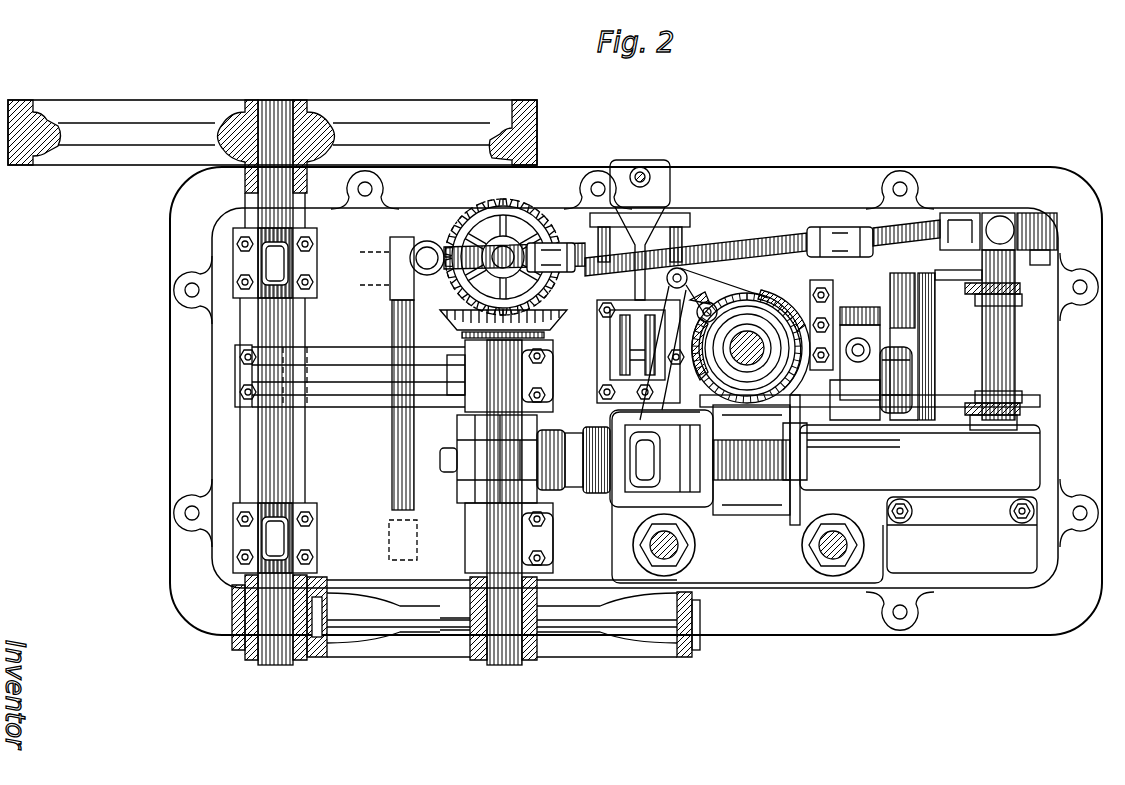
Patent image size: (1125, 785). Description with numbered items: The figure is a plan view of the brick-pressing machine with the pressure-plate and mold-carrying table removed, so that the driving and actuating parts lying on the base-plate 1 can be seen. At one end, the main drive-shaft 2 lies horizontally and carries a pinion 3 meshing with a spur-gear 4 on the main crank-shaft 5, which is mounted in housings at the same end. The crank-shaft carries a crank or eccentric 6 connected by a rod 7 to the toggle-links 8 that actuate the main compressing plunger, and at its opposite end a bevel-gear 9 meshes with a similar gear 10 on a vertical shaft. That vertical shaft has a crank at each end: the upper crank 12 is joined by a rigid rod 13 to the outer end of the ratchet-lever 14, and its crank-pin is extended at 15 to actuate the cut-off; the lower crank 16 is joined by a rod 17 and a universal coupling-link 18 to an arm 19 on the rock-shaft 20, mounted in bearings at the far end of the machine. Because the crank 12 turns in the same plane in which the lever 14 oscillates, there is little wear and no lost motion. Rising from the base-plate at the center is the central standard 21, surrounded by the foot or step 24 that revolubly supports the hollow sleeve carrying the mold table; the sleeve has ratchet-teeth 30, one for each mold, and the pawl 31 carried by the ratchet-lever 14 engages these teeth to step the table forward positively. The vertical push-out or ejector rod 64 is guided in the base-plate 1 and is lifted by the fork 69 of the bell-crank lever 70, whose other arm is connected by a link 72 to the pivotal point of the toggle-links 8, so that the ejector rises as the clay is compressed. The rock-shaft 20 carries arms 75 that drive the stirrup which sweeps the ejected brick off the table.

The base-plate 1 is at (188, 430).
The main drive-shaft 2 is at (278, 664).
The pinion 3 is at (299, 658).
The spur-gear 4 is at (400, 637).
The main crank-shaft 5 is at (505, 666).
The crank or eccentric 6 is at (488, 459).
The rod 7 is at (552, 480).
The toggle-links 8 is at (696, 480).
The bevel-gear 9 is at (613, 327).
The bevel-gear 10 is at (550, 297).
The crank 12 is at (448, 267).
The rod 13 is at (607, 268).
The ratchet-lever 14 is at (712, 330).
The extended crank-pin 15 is at (428, 248).
The crank 16 is at (540, 258).
The rod 17 is at (740, 250).
The universal coupling-link 18 is at (962, 222).
The arm 19 is at (1012, 217).
The rock-shaft 20 is at (998, 352).
The central standard 21 is at (750, 342).
The foot or step 24 is at (798, 300).
The ratchet-teeth 30 is at (795, 347).
The spring-pressed pawl 31 is at (713, 310).
The push-out or ejector rod 64 is at (858, 350).
The fork 69 is at (885, 323).
The bell-crank lever 70 is at (916, 276).
The link 72 is at (805, 448).
The arms 75 is at (672, 337).